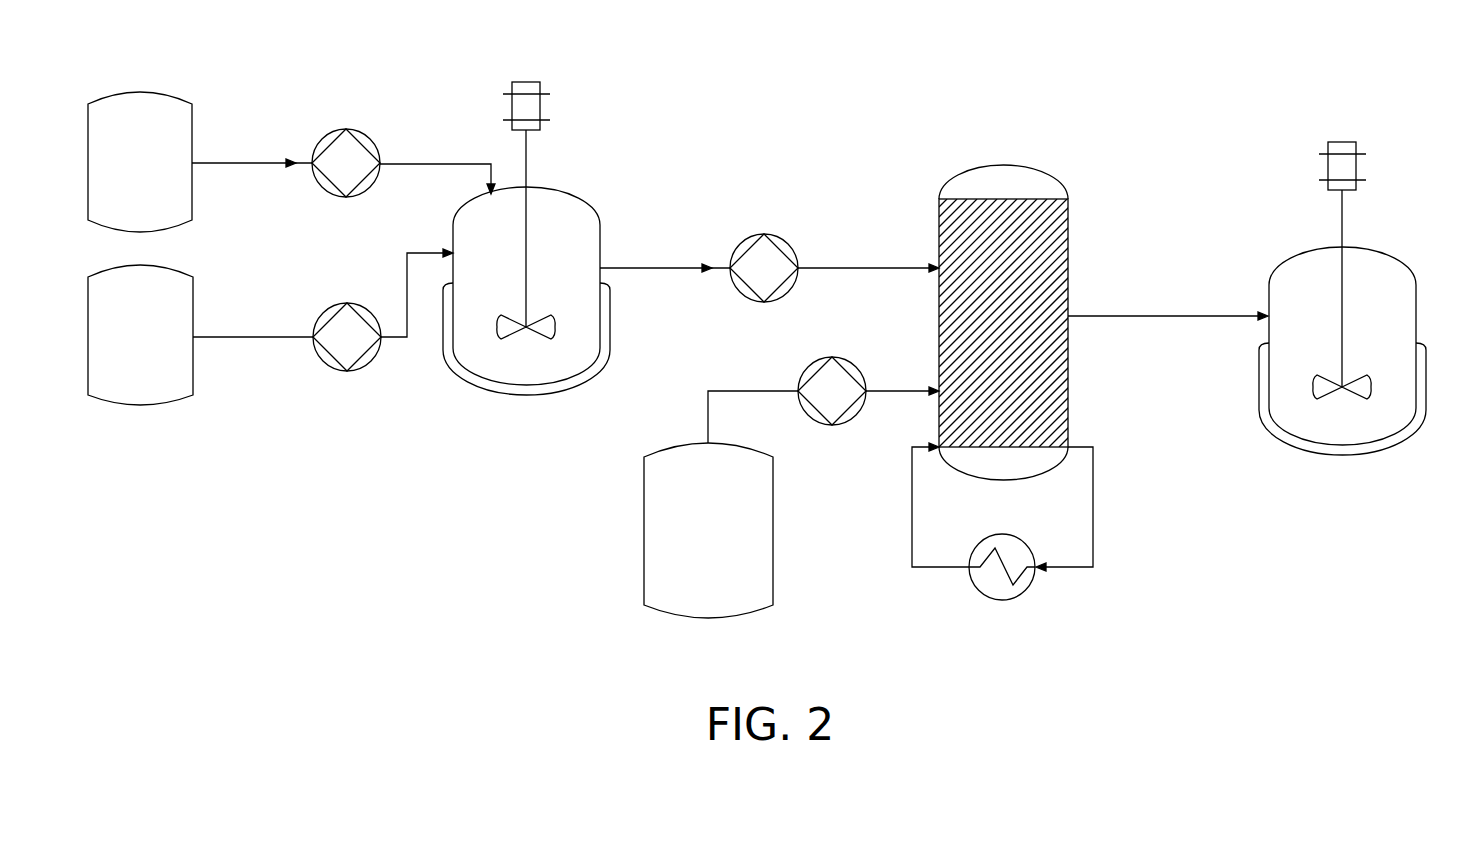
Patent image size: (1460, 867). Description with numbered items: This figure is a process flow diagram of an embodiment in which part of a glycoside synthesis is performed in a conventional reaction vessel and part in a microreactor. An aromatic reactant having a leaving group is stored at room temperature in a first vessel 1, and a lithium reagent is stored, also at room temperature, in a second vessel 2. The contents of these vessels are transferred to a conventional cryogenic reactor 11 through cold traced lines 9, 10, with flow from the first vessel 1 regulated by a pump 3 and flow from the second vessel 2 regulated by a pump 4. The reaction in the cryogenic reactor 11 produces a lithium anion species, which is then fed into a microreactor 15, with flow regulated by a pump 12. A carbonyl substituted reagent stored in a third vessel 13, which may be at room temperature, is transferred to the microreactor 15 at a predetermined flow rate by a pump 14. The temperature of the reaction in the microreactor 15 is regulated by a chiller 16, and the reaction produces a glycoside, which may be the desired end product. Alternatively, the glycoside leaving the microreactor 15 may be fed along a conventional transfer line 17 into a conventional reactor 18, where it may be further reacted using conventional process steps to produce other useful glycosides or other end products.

The first vessel 1 is at (155, 117).
The second vessel 2 is at (127, 365).
The pump 3 is at (345, 153).
The pump 4 is at (347, 370).
The cold traced line 9 is at (413, 165).
The cold traced line 10 is at (398, 338).
The conventional cryogenic reactor 11 is at (560, 222).
The pump 12 is at (764, 235).
The third vessel 13 is at (763, 520).
The pump 14 is at (818, 398).
The microreactor 15 is at (995, 183).
The chiller 16 is at (1008, 550).
The conventional transfer line 17 is at (1130, 315).
The conventional reactor 18 is at (1375, 308).